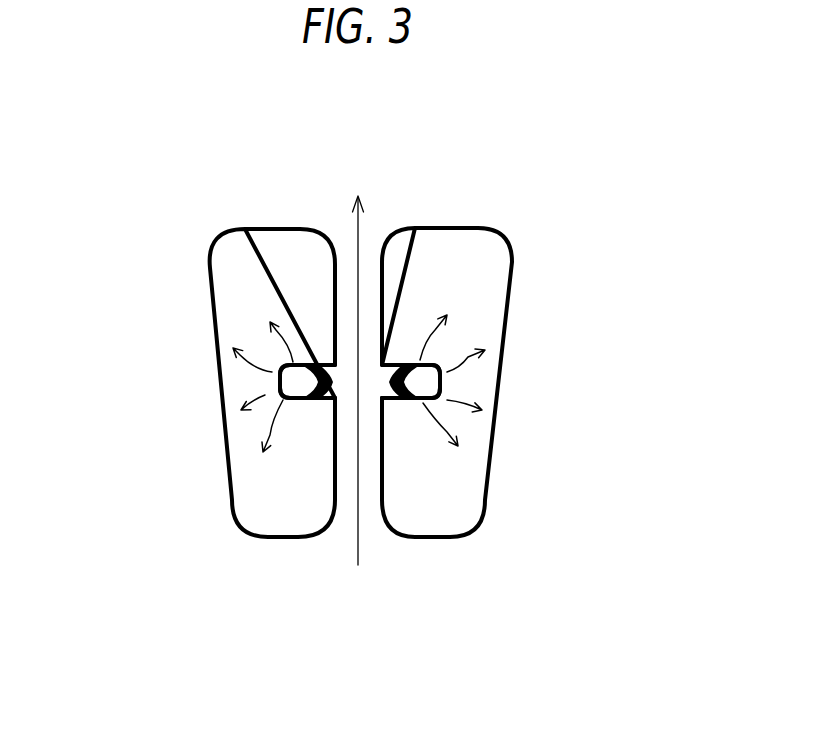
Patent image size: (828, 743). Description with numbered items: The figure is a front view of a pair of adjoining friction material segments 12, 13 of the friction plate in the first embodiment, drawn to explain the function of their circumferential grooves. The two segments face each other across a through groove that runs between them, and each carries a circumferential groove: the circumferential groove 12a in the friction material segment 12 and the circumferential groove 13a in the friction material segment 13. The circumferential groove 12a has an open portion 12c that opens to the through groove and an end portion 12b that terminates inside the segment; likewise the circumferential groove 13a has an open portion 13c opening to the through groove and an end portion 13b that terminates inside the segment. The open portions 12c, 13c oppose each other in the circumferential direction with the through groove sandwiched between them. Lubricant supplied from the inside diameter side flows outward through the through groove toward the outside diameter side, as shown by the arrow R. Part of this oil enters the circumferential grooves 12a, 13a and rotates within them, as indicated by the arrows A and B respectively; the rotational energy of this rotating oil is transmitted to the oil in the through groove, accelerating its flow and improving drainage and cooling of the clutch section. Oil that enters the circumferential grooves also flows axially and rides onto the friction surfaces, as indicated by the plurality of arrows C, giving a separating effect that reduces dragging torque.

The friction material segment 12 is at (233, 280).
The circumferential groove 12a is at (278, 400).
The end portion 12b is at (278, 378).
The open portion 12c is at (333, 368).
The friction material segment 13 is at (475, 258).
The circumferential groove 13a is at (440, 400).
The end portion 13b is at (441, 378).
The open portion 13c is at (385, 365).
The arrow A is at (315, 400).
The arrow B is at (400, 398).
The arrows C is at (292, 360).
The arrow R is at (362, 402).